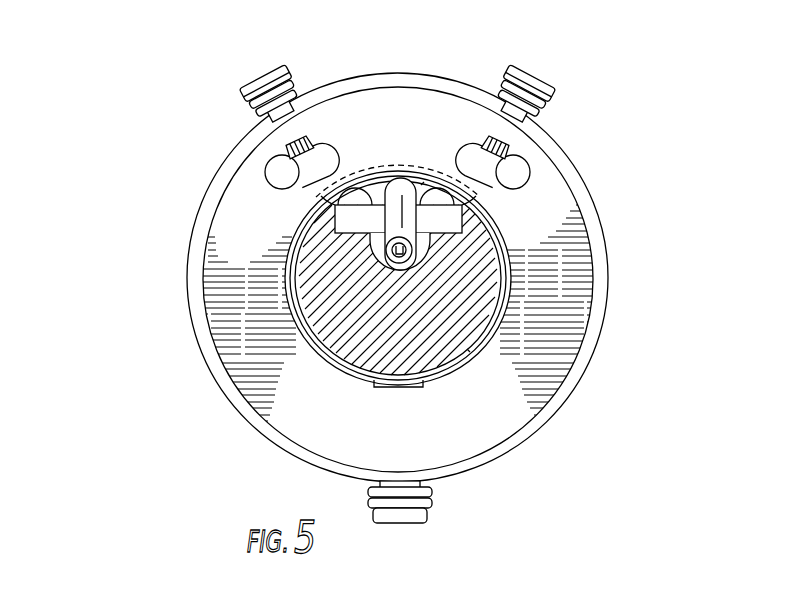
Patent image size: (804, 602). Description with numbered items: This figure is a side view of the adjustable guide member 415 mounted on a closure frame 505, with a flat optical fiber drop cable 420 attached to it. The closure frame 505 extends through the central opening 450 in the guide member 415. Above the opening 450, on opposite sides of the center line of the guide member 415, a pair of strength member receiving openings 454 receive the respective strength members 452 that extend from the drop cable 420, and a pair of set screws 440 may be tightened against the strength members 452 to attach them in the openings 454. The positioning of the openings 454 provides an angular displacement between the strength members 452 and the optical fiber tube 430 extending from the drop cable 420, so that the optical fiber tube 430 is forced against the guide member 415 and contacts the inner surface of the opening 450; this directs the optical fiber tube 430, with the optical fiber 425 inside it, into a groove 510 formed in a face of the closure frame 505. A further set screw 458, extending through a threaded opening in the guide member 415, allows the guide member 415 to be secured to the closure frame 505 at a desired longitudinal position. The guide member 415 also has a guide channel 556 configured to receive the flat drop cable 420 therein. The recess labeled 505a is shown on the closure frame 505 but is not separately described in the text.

The adjustable guide member 415 is at (186, 175).
The optical fiber drop cable 420 is at (420, 185).
The optical fiber 425 is at (397, 262).
The optical fiber tube 430 is at (381, 241).
The set screws 440 is at (262, 70).
The opening 450 is at (399, 178).
The strength members 452 is at (268, 182).
The strength member receiving openings 454 is at (295, 148).
The set screw 458 is at (412, 522).
The closure frame 505 is at (458, 289).
The plate recess 505a is at (467, 349).
The groove 510 is at (418, 252).
The guide channel 556 is at (333, 230).